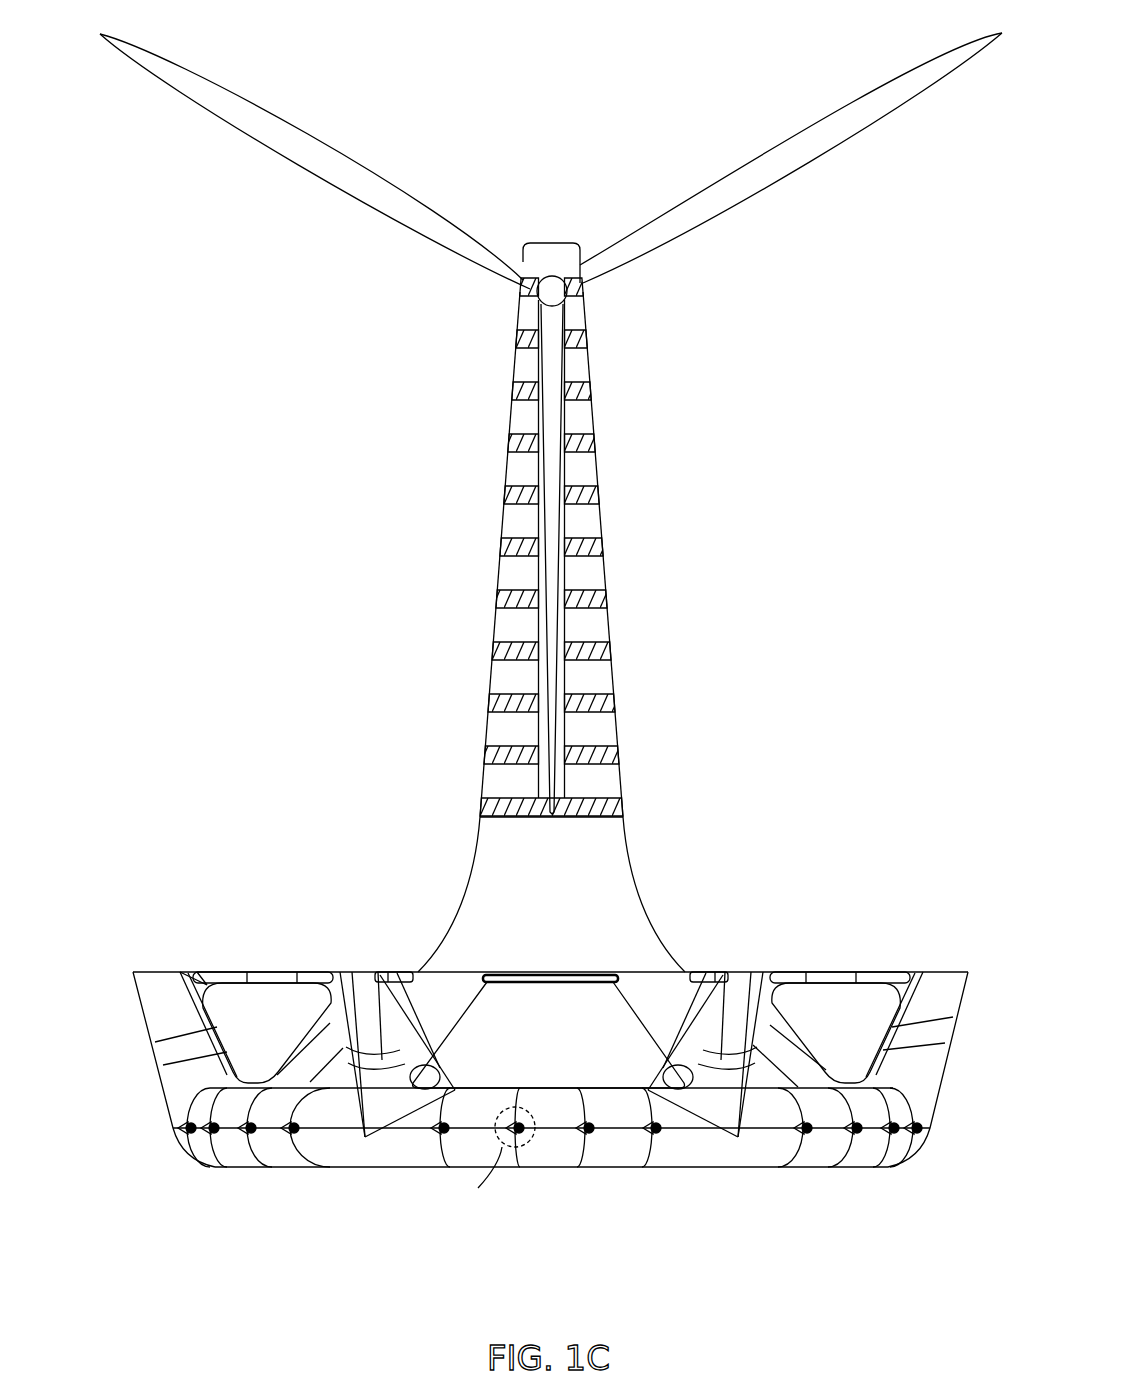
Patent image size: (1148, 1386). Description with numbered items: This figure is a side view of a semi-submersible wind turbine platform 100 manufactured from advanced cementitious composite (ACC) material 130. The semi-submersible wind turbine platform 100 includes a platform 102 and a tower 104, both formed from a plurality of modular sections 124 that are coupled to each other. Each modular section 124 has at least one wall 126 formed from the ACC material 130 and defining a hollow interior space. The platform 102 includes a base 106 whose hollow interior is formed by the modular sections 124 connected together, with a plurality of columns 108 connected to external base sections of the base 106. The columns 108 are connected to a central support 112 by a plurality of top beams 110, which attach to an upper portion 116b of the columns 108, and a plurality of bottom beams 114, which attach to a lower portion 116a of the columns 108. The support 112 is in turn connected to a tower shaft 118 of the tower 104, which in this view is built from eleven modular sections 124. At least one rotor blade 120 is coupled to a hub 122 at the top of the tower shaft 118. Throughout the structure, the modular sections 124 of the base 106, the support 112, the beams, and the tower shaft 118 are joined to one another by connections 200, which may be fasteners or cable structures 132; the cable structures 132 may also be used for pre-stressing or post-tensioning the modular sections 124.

The semi-submersible wind turbine platform 100 is at (890, 315).
The platform 102 is at (890, 1255).
The tower 104 is at (305, 648).
The base 106 is at (545, 1088).
The columns 108 is at (150, 1043).
The top beams 110 is at (273, 972).
The support 112 is at (613, 945).
The bottom beams 114 is at (297, 1062).
The lower portion 116a is at (243, 1080).
The upper portion 116b is at (187, 972).
The tower shaft 118 is at (437, 228).
The rotor blade 120 is at (807, 163).
The hub 122 is at (552, 284).
The modular sections 124 is at (480, 720).
The wall 126 is at (618, 717).
The advanced cementitious composite (ACC) material 130 is at (600, 725).
The cable structure 132 is at (487, 807).
The connections 200 is at (600, 830).